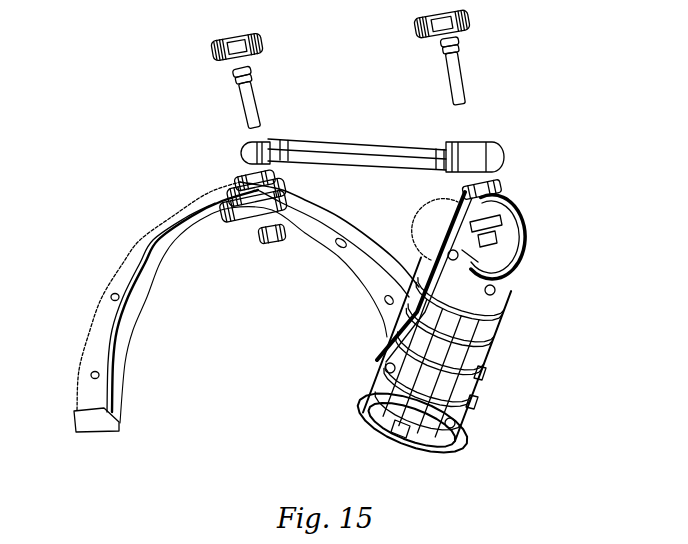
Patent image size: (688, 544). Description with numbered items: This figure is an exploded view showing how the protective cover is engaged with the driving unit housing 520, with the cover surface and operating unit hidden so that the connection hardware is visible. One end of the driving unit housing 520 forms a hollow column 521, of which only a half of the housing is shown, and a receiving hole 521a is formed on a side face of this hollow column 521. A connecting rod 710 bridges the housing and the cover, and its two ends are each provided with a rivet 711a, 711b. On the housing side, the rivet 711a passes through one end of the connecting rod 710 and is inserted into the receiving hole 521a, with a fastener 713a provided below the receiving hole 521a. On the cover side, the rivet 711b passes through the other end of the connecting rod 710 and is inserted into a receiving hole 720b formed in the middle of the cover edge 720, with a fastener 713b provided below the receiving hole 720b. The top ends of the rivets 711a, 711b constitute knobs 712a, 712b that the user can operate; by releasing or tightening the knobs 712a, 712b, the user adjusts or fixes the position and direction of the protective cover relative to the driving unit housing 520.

The driving unit housing 520 is at (510, 318).
The hollow column 521 is at (508, 228).
The receiving hole 521a is at (500, 185).
The connecting rod 710 is at (350, 152).
The rivet 711a is at (446, 78).
The rivet 711b is at (252, 90).
The knob 712a is at (418, 24).
The knob 712b is at (256, 41).
The fastener 713a is at (440, 232).
The fastener 713b is at (278, 245).
The cover edge 720 is at (205, 213).
The receiving hole 720b is at (232, 182).